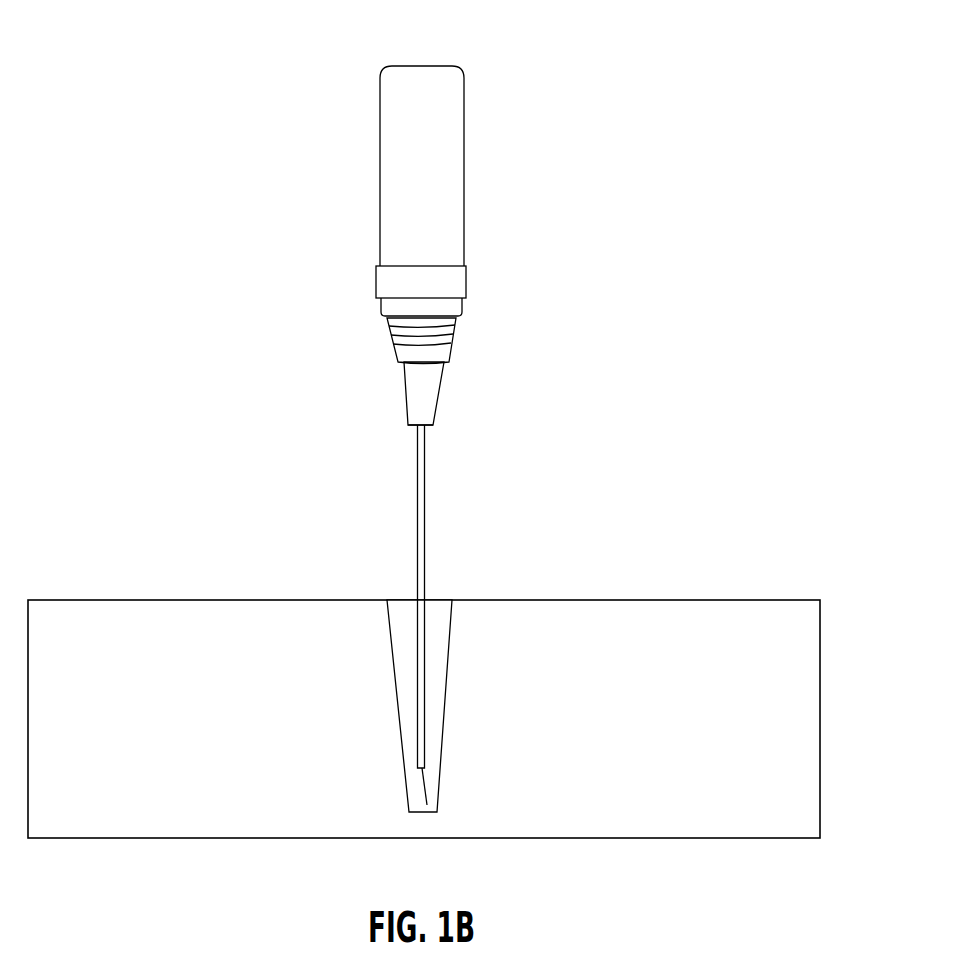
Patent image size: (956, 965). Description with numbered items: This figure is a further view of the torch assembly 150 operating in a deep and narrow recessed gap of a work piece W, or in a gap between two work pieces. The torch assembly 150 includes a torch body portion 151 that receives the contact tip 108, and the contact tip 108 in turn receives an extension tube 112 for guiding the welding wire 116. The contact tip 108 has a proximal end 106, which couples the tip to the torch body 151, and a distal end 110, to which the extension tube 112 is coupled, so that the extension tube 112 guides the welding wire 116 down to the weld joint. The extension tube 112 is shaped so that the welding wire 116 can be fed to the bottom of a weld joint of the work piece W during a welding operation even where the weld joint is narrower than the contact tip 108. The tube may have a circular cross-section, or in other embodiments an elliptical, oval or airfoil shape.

The torch assembly 150 is at (510, 406).
The torch body portion 151 is at (447, 175).
The proximal end 106 is at (432, 362).
The contact tip 108 is at (425, 398).
The distal end 110 is at (410, 428).
The extension tube 112 is at (420, 486).
The work piece W is at (633, 627).
The welding wire 116 is at (427, 785).